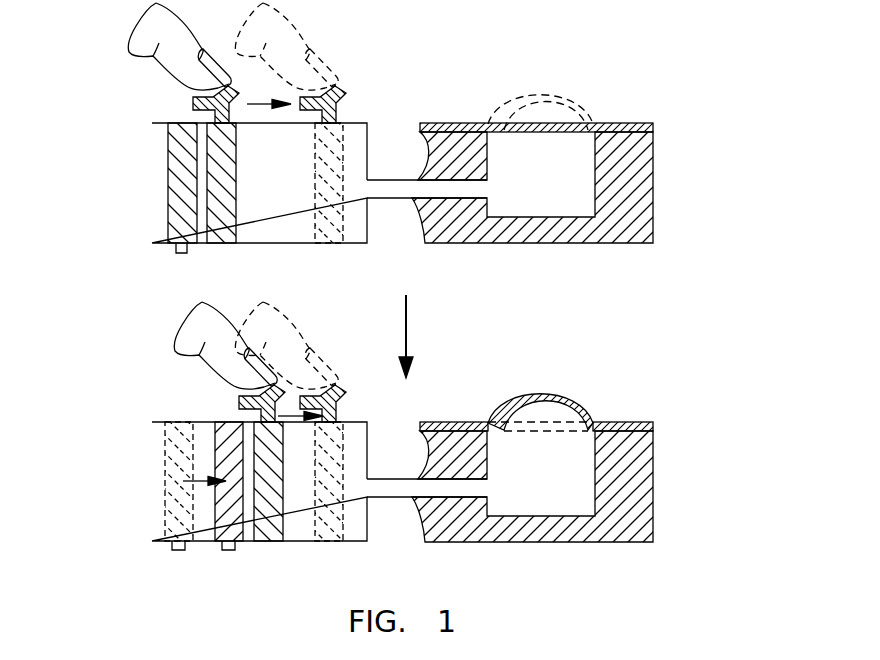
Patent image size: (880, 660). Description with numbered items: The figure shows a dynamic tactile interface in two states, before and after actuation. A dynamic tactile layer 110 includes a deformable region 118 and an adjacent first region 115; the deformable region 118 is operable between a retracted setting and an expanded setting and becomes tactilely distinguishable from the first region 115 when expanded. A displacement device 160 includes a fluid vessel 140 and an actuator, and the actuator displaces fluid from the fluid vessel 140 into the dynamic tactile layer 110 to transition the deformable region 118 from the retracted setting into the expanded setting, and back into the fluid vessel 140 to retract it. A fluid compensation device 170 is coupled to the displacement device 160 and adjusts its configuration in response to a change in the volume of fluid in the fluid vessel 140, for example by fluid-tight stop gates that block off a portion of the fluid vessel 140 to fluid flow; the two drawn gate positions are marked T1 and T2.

The dynamic tactile layer 110 is at (443, 128).
The first region 115 is at (474, 128).
The deformable region 118 is at (569, 106).
The fluid vessel 140 is at (279, 222).
The displacement device 160 is at (222, 218).
The fluid compensation device 170 is at (182, 215).
The tab position T1 is at (180, 559).
The tab position T2 is at (228, 559).